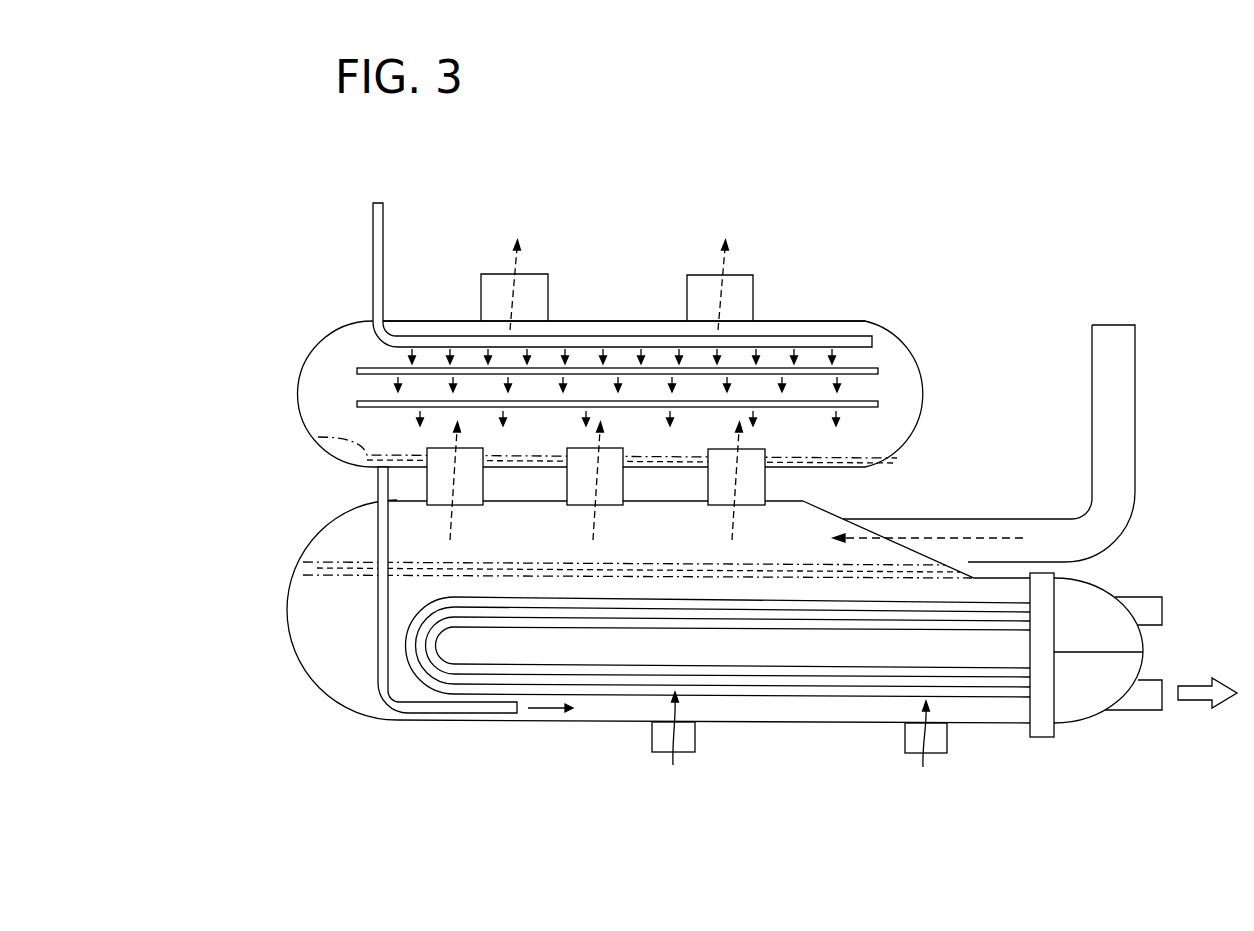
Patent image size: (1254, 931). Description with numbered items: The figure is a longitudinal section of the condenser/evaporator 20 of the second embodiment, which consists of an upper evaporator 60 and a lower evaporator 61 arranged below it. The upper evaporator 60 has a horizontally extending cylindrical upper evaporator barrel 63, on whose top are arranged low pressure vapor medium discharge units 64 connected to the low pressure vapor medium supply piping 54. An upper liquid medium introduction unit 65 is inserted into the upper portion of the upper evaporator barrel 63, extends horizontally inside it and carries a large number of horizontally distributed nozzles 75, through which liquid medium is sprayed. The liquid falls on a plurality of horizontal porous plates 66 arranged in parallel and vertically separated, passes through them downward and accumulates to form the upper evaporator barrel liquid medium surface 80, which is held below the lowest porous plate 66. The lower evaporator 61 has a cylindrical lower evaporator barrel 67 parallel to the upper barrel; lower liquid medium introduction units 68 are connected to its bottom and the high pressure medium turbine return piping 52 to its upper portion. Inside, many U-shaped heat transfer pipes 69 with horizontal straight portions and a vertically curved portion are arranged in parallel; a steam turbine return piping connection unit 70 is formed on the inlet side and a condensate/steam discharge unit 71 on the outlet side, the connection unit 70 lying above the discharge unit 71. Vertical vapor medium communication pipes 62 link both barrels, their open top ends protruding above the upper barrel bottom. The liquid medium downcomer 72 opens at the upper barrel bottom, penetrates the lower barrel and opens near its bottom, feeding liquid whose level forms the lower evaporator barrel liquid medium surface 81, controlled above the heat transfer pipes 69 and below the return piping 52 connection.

The condenser/evaporator 20 is at (153, 401).
The high pressure medium turbine return piping 52 is at (1135, 437).
The low pressure vapor medium supply piping 54 is at (753, 285).
The upper evaporator 60 is at (243, 367).
The lower evaporator 61 is at (243, 564).
The vapor medium communication pipes 62 is at (765, 484).
The upper evaporator barrel 63 is at (316, 345).
The low pressure vapor medium discharge units 64 is at (753, 318).
The upper liquid medium introduction unit 65 is at (373, 250).
The porous plates 66 is at (878, 404).
The lower evaporator barrel 67 is at (288, 628).
The lower liquid medium introduction units 68 is at (695, 740).
The heat transfer pipes 69 is at (1008, 698).
The steam turbine return piping connection unit 70 is at (1138, 597).
The condensate/steam discharge unit 71 is at (1127, 712).
The liquid medium downcomer 72 is at (378, 483).
The nozzles 75 is at (833, 354).
The upper evaporator barrel liquid medium surface 80 is at (318, 437).
The lower evaporator barrel liquid medium surface 81 is at (333, 560).